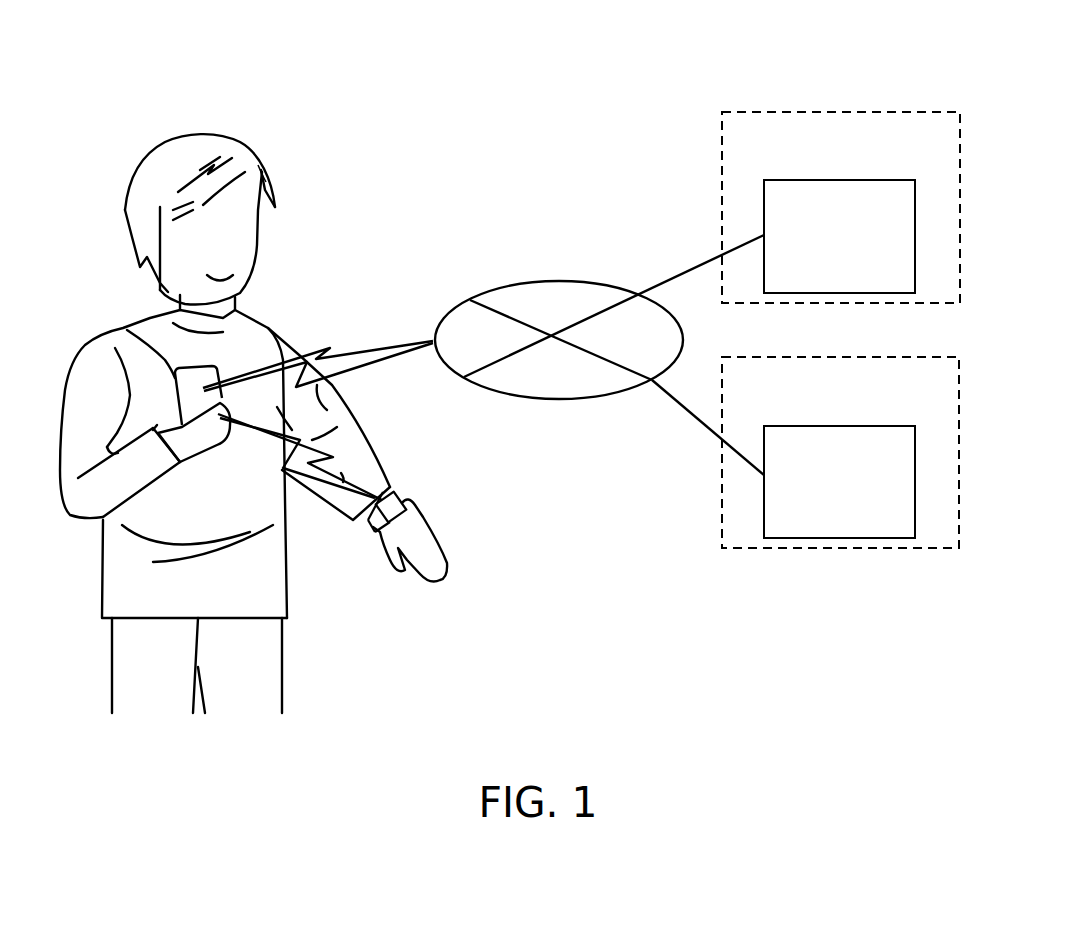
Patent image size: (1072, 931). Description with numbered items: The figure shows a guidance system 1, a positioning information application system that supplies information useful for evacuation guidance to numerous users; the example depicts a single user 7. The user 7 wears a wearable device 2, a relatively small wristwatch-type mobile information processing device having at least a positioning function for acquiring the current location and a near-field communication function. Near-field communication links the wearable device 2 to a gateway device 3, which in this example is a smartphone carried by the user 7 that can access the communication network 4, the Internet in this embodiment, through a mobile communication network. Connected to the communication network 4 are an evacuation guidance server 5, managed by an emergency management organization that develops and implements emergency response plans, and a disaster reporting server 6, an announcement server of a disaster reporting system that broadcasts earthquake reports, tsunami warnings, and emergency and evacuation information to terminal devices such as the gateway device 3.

The guidance system 1 is at (547, 47).
The wearable device 2 is at (407, 498).
The gateway device 3 is at (123, 328).
The communication network 4 is at (552, 280).
The evacuation guidance server 5 is at (915, 240).
The disaster reporting server 6 is at (915, 478).
The user 7 is at (263, 167).